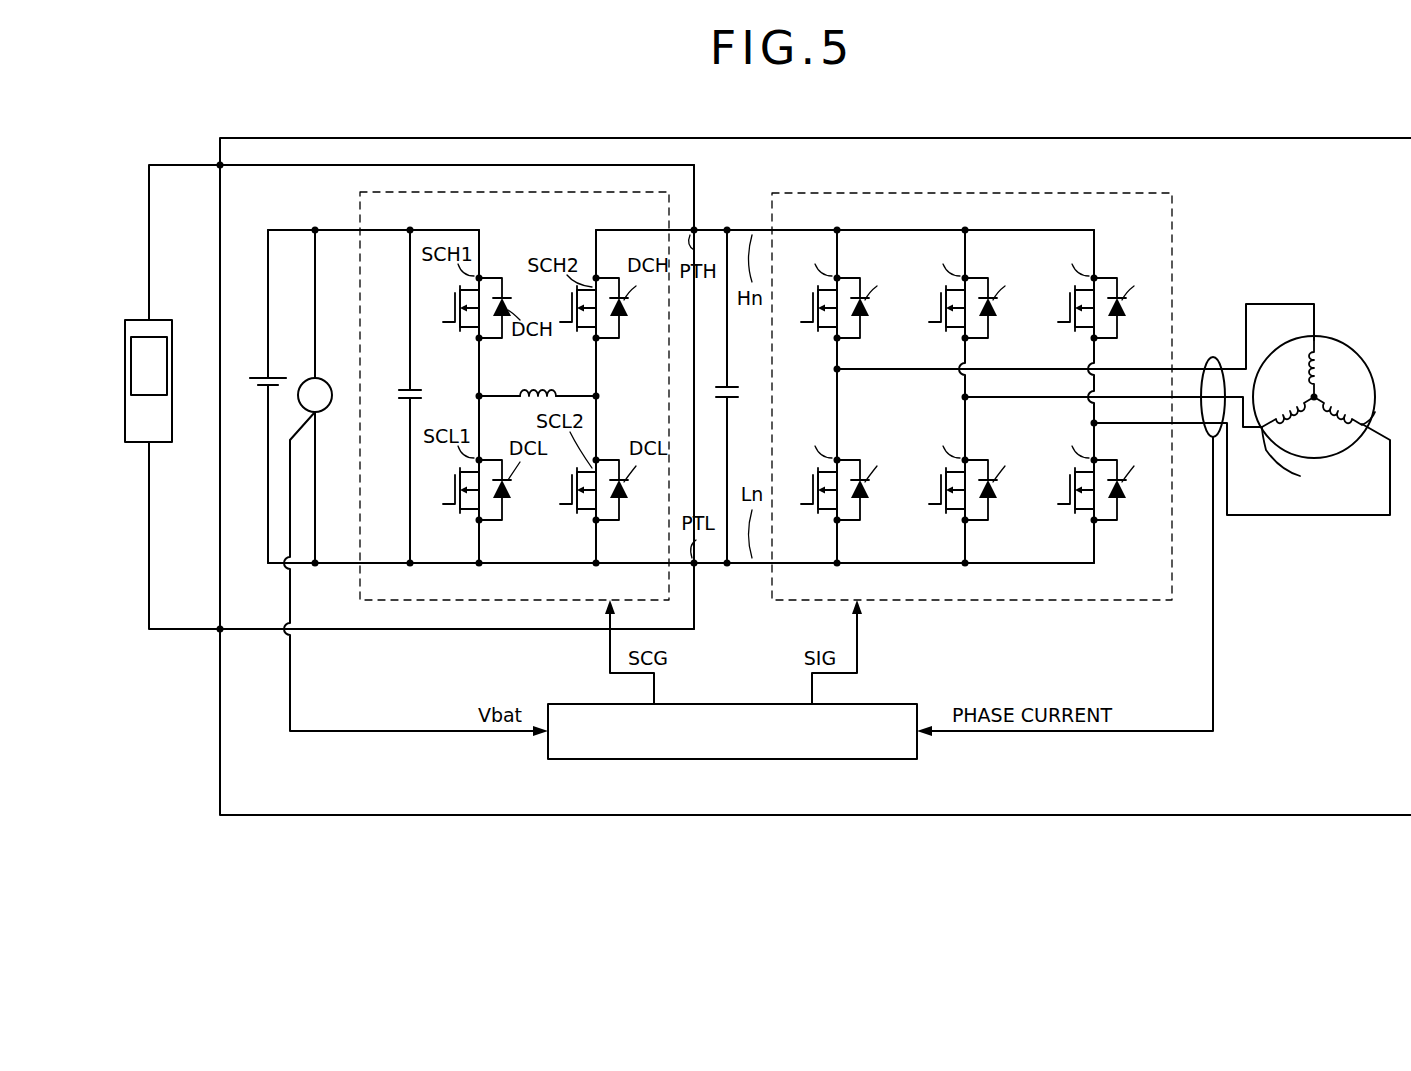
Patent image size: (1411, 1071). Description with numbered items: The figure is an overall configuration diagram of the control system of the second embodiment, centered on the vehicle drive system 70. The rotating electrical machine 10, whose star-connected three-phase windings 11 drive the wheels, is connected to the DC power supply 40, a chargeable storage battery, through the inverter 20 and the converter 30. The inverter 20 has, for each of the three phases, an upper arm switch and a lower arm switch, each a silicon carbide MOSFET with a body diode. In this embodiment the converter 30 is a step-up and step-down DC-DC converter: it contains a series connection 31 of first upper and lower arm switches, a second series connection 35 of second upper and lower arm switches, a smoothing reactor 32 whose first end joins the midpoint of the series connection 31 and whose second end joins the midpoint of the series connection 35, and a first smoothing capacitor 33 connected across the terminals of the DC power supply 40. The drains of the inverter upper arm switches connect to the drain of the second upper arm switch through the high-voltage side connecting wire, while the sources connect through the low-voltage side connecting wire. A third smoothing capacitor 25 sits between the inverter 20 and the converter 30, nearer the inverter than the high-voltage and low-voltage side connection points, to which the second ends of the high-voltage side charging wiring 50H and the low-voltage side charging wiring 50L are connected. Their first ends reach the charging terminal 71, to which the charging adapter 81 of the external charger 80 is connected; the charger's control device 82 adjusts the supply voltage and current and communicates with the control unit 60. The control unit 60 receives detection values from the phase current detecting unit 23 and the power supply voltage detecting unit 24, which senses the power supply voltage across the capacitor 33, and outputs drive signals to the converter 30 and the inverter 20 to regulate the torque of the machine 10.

The rotating electrical machine 10 is at (1366, 360).
The three-phase windings 11 is at (1302, 356).
The inverter 20 is at (1172, 213).
The phase current detecting unit 23 is at (1214, 357).
The power supply voltage detecting unit 24 is at (305, 381).
The third smoothing capacitor 25 is at (722, 385).
The converter 30 is at (360, 207).
The series connection 31 is at (498, 242).
The smoothing reactor 32 is at (538, 390).
The first smoothing capacitor 33 is at (406, 388).
The series connection 35 is at (584, 238).
The DC power supply 40 is at (262, 378).
The high-voltage side charging wiring 50H is at (694, 192).
The low-voltage side charging wiring 50L is at (694, 603).
The control unit 60 is at (912, 704).
The drive system 70 is at (410, 138).
The charging terminal 71 is at (225, 170).
The charger 80 is at (135, 320).
The charging adapter 81 is at (182, 165).
The control device 82 is at (131, 365).